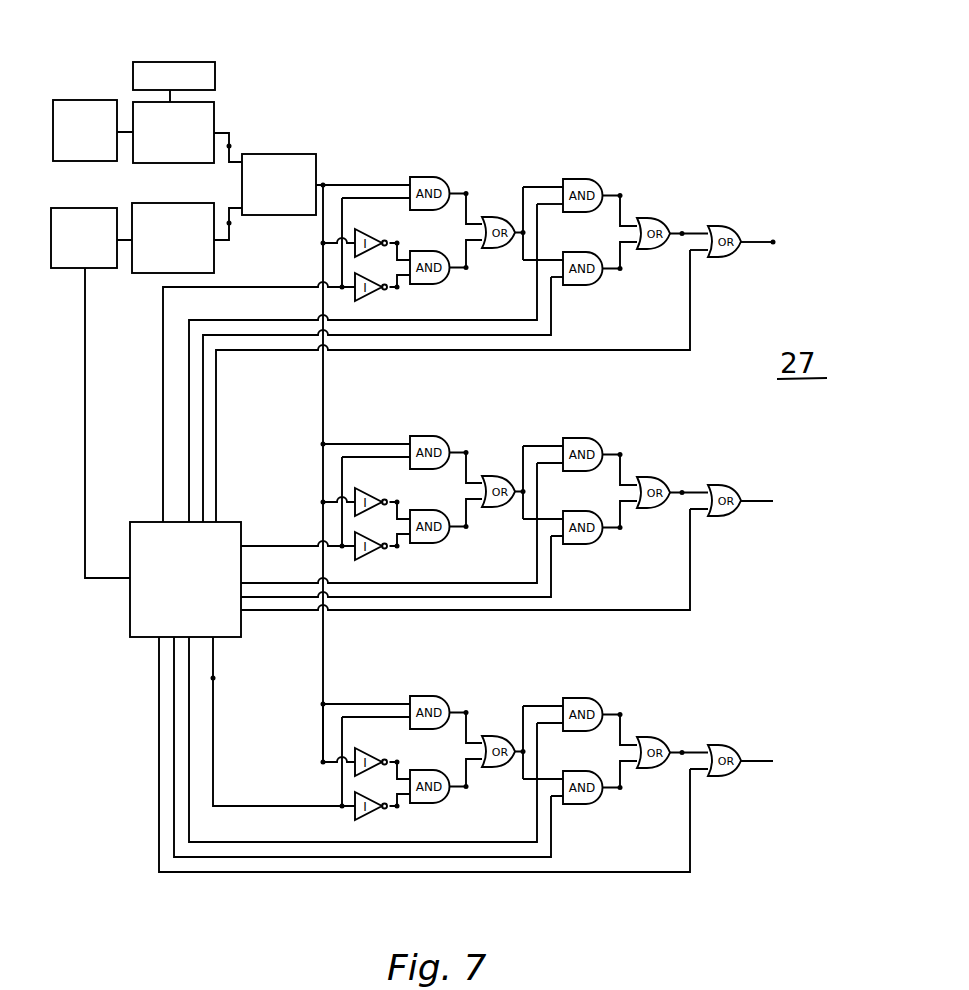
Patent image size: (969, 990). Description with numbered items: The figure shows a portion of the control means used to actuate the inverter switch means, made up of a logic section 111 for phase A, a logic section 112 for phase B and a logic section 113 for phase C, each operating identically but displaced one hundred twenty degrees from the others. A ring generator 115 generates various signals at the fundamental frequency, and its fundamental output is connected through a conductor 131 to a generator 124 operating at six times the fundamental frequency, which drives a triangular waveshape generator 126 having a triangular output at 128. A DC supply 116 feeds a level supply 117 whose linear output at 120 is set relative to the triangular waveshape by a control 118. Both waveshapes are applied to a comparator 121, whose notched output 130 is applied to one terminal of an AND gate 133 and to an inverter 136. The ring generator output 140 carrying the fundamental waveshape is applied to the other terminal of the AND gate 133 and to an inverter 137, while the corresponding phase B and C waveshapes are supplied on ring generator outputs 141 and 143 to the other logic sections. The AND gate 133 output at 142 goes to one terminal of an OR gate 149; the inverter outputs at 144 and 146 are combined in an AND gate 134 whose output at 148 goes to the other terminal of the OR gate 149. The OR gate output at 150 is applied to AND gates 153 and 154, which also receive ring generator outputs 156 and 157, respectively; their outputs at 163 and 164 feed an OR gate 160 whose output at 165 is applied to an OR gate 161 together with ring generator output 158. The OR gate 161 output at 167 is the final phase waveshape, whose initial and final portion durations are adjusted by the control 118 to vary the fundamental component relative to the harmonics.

The logic section for phase A 111 is at (498, 108).
The logic section for phase B 112 is at (514, 433).
The logic section for phase C 113 is at (514, 688).
The ring generator 115 is at (146, 521).
The DC supply 116 is at (102, 100).
The level supply 117 is at (215, 116).
The control 118 is at (170, 62).
The output of level supply 120 is at (229, 146).
The comparator 121 is at (306, 154).
The generator 124 is at (70, 208).
The triangular waveshape generator 126 is at (192, 203).
The output of triangular waveshape generator 128 is at (229, 223).
The comparator output 130 is at (324, 185).
The conductor 131 is at (83, 364).
The AND gate 133 is at (417, 177).
The AND gate 134 is at (450, 236).
The inverter 136 is at (381, 231).
The inverter 137 is at (366, 299).
The ring generator output 140 is at (163, 408).
The ring generator output 141 is at (285, 545).
The output of AND gate 133 142 is at (467, 192).
The ring generator output 143 is at (213, 678).
The output of inverter 136 144 is at (417, 232).
The output of inverter 137 146 is at (398, 289).
The output of AND gate 134 148 is at (482, 248).
The OR gate 149 is at (484, 217).
The output of OR gate 149 150 is at (526, 238).
The AND gate 153 is at (572, 179).
The AND gate 154 is at (577, 285).
The ring generator output 156 is at (208, 320).
The ring generator output 157 is at (244, 337).
The ring generator output 158 is at (234, 352).
The OR gate 160 is at (644, 218).
The OR gate 161 is at (720, 226).
The output of AND gate 153 163 is at (625, 190).
The output of AND gate 154 164 is at (622, 269).
The output of OR gate 160 165 is at (682, 232).
The output of OR gate 161 167 is at (774, 241).